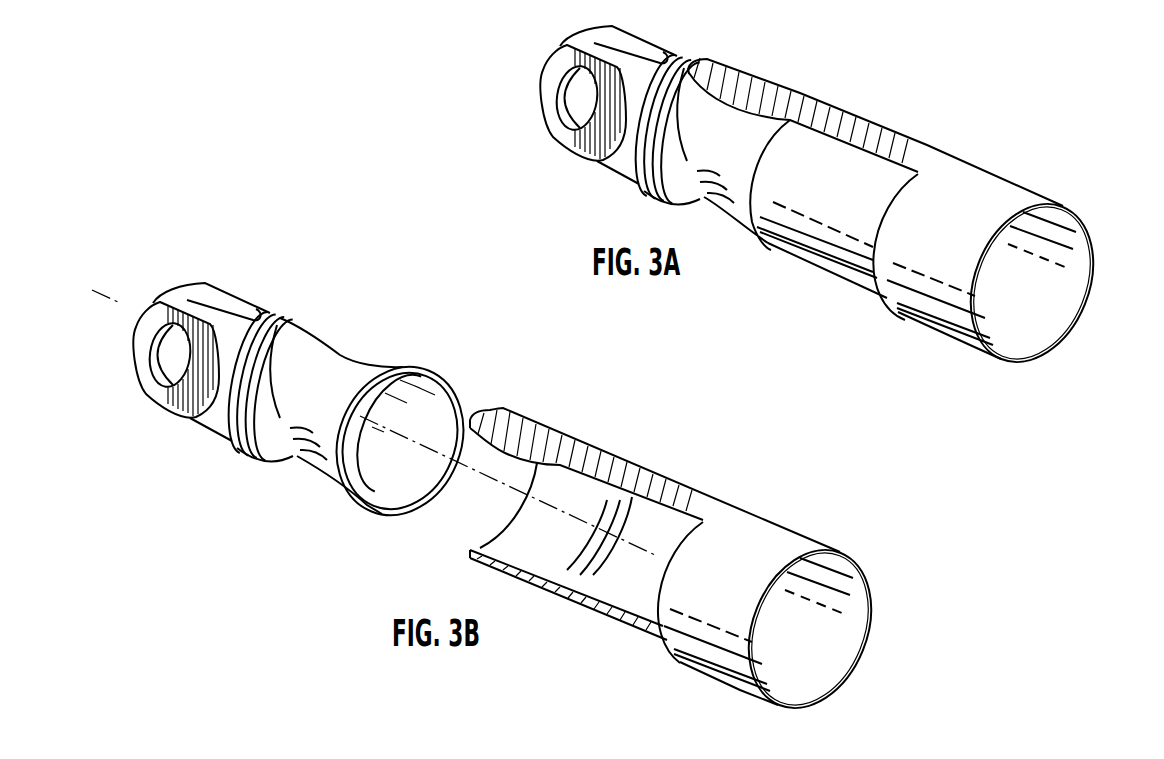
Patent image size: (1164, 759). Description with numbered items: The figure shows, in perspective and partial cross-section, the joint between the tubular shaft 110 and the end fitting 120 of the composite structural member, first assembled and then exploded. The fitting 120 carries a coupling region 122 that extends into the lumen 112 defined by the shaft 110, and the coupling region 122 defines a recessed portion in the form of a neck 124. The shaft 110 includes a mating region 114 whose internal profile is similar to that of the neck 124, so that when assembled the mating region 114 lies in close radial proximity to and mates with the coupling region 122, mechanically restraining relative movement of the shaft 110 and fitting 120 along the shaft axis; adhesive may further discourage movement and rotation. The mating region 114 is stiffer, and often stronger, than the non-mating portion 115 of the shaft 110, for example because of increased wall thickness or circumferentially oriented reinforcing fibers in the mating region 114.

In FIG. 3A, the tubular shaft 110 is at (921, 138).
In FIG. 3B, the tubular shaft 110 is at (698, 486).
In FIG. 3A, the lumen 112 is at (1061, 287).
In FIG. 3B, the lumen 112 is at (838, 633).
In FIG. 3A, the mating region 114 is at (770, 249).
In FIG. 3B, the mating region 114 is at (545, 590).
In FIG. 3A, the non-mating portion 115 is at (937, 335).
In FIG. 3B, the non-mating portion 115 is at (713, 679).
In FIG. 3B, the end fitting 120 is at (219, 280).
In FIG. 3B, the coupling region 122 is at (361, 355).
In FIG. 3B, the neck 124 is at (316, 468).